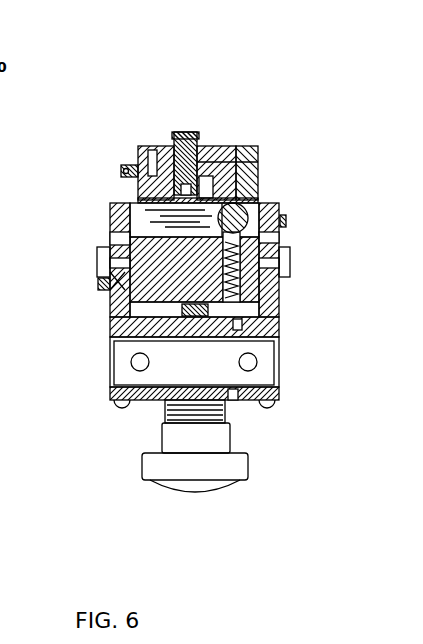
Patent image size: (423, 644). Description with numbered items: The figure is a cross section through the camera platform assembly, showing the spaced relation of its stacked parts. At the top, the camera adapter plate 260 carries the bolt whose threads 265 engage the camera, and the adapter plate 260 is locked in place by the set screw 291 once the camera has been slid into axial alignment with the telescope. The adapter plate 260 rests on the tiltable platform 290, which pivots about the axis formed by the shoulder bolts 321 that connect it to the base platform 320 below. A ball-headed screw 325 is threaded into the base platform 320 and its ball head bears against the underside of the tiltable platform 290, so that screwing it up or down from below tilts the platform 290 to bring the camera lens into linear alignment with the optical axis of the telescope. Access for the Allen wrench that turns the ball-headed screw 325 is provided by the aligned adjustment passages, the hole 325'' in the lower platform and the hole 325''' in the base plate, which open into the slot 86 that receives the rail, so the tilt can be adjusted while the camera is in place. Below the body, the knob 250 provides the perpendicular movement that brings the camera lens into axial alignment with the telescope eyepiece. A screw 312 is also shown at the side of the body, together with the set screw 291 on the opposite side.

The camera adapter plate 260 is at (225, 146).
The threads of the bolt 265 is at (185, 132).
The tiltable platform 290 is at (258, 150).
The set screw 291 is at (124, 168).
The base platform 320 is at (110, 300).
The ball-headed screw 325 is at (278, 239).
The shoulder bolts 321 is at (290, 254).
The set screw 312 is at (97, 285).
The slot 86 is at (193, 363).
The hole in platform 325'' is at (283, 358).
The hole in base plate 325''' is at (279, 422).
The knob 250 is at (208, 468).